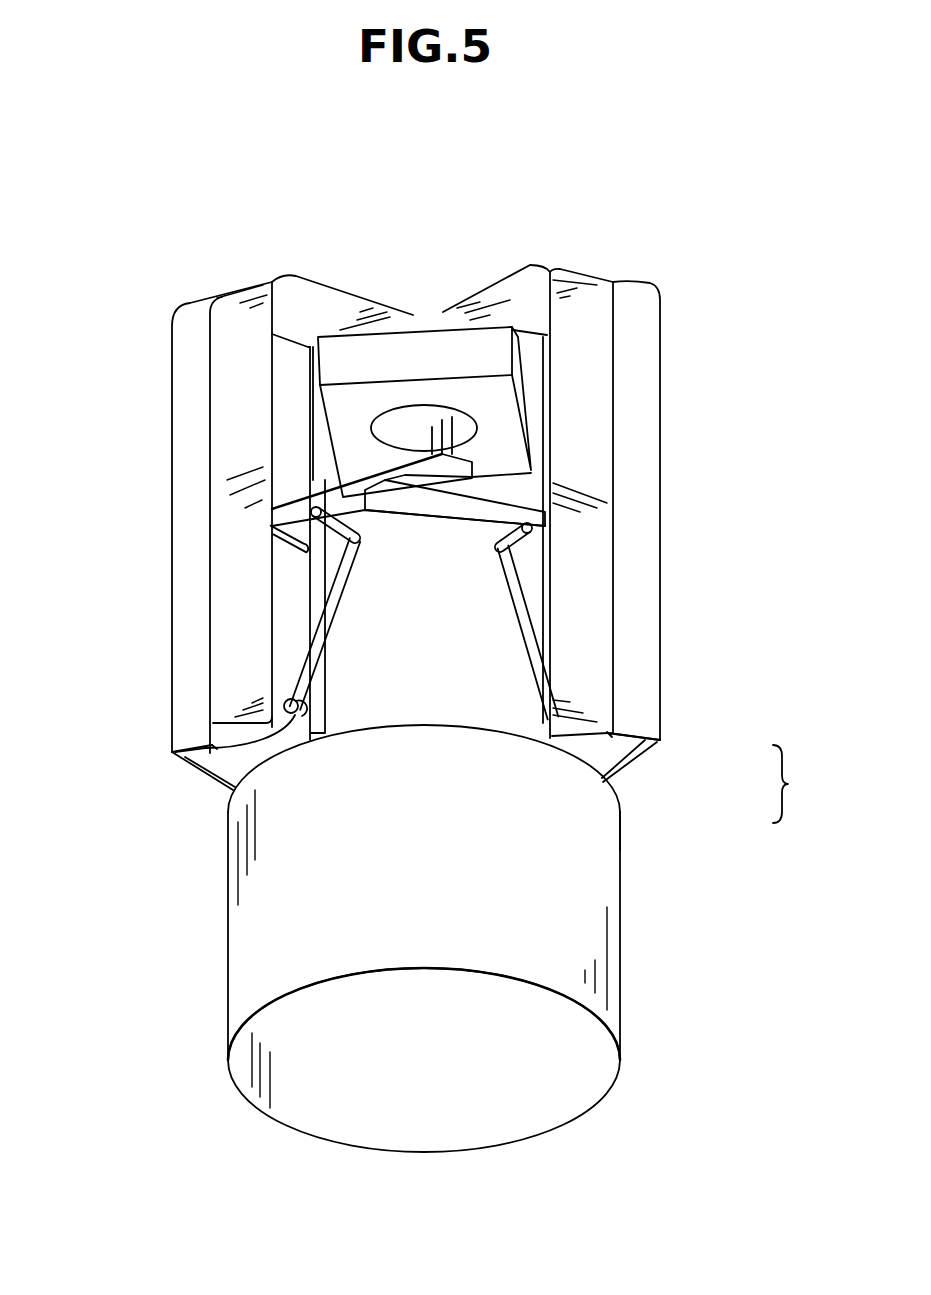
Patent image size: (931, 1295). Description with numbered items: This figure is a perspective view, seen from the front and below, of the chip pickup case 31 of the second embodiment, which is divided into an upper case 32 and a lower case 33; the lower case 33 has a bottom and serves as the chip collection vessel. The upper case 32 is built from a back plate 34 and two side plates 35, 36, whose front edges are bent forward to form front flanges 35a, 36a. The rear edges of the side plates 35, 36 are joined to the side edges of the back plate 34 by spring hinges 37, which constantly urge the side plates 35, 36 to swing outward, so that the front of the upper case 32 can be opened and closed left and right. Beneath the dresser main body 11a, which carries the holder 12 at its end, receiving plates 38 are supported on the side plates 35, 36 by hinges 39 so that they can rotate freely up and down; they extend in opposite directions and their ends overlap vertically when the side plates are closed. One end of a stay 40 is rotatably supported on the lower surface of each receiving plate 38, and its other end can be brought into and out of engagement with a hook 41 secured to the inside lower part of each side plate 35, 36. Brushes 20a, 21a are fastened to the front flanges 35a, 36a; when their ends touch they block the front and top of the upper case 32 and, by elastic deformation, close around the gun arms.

The dresser main body 11a is at (423, 353).
The holder 12 is at (470, 448).
The brush 20a is at (227, 406).
The brush 21a is at (597, 393).
The chip pickup case 31 is at (800, 784).
The upper case 32 is at (665, 718).
The lower case 33 is at (622, 832).
The back plate 34 is at (422, 707).
The side plate 35 is at (213, 780).
The front flange 35a is at (188, 610).
The side plate 36 is at (630, 770).
The front flange 36a is at (633, 553).
The spring hinge 37 is at (323, 687).
The receiving plate 38 is at (360, 510).
The hinge 39 is at (300, 553).
The stay 40 is at (523, 612).
The hook 41 is at (192, 756).